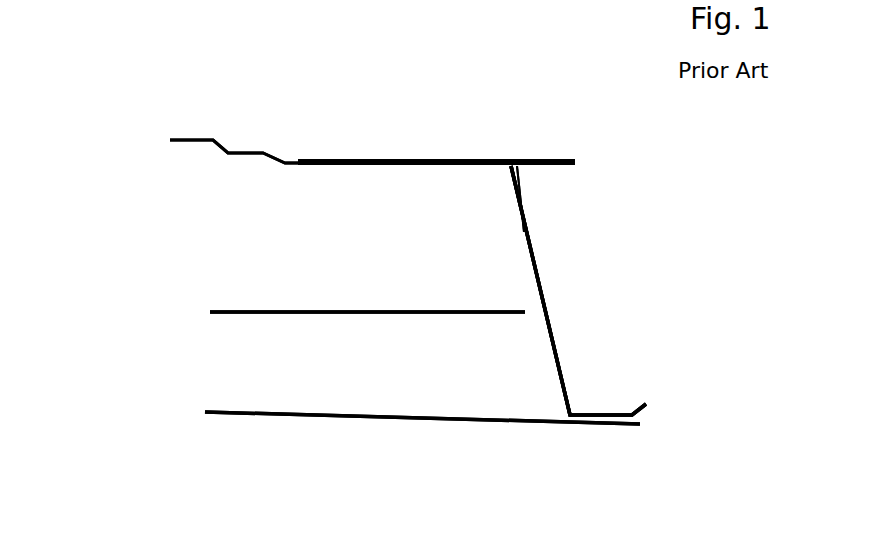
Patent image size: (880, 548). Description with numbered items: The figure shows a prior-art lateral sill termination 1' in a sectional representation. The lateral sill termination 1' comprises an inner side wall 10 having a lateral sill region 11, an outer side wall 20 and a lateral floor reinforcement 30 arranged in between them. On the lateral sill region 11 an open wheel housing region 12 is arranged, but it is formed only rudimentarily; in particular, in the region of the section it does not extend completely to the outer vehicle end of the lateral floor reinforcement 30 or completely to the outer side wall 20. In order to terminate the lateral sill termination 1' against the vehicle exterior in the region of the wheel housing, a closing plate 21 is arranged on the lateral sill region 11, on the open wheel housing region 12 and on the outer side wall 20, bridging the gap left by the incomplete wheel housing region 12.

The lateral sill termination 1' is at (335, 223).
The inner side wall 10 is at (372, 100).
The lateral sill region 11 is at (310, 157).
The open wheel housing region 12 is at (508, 184).
The closing plate 21 is at (542, 272).
The lateral floor reinforcement 30 is at (294, 309).
The outer side wall 20 is at (383, 424).